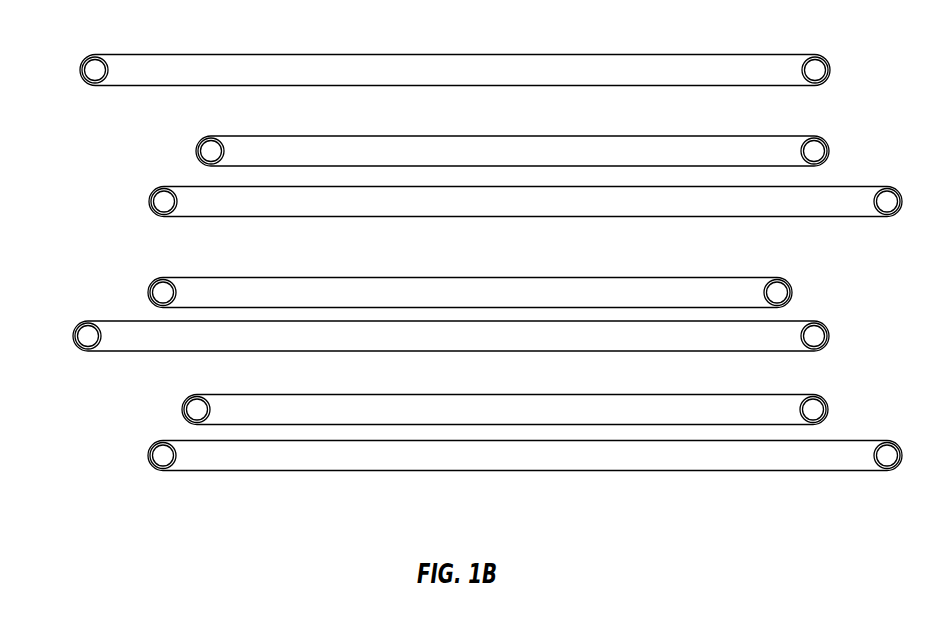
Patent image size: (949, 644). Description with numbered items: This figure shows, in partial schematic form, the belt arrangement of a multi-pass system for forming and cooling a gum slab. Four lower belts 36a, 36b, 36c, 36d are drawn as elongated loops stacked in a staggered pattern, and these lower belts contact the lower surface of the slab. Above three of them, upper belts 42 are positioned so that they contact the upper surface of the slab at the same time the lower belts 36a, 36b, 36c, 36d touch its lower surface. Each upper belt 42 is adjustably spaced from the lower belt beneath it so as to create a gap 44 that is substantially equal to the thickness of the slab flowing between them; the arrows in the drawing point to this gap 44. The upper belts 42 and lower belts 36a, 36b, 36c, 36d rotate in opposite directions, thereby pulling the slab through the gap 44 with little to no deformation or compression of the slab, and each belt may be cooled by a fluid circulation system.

The lower belt 36a is at (731, 62).
The lower belt 36b is at (183, 193).
The lower belt 36c is at (108, 326).
The lower belt 36d is at (850, 450).
The upper belt 42 is at (732, 144).
The gap 44 is at (824, 177).